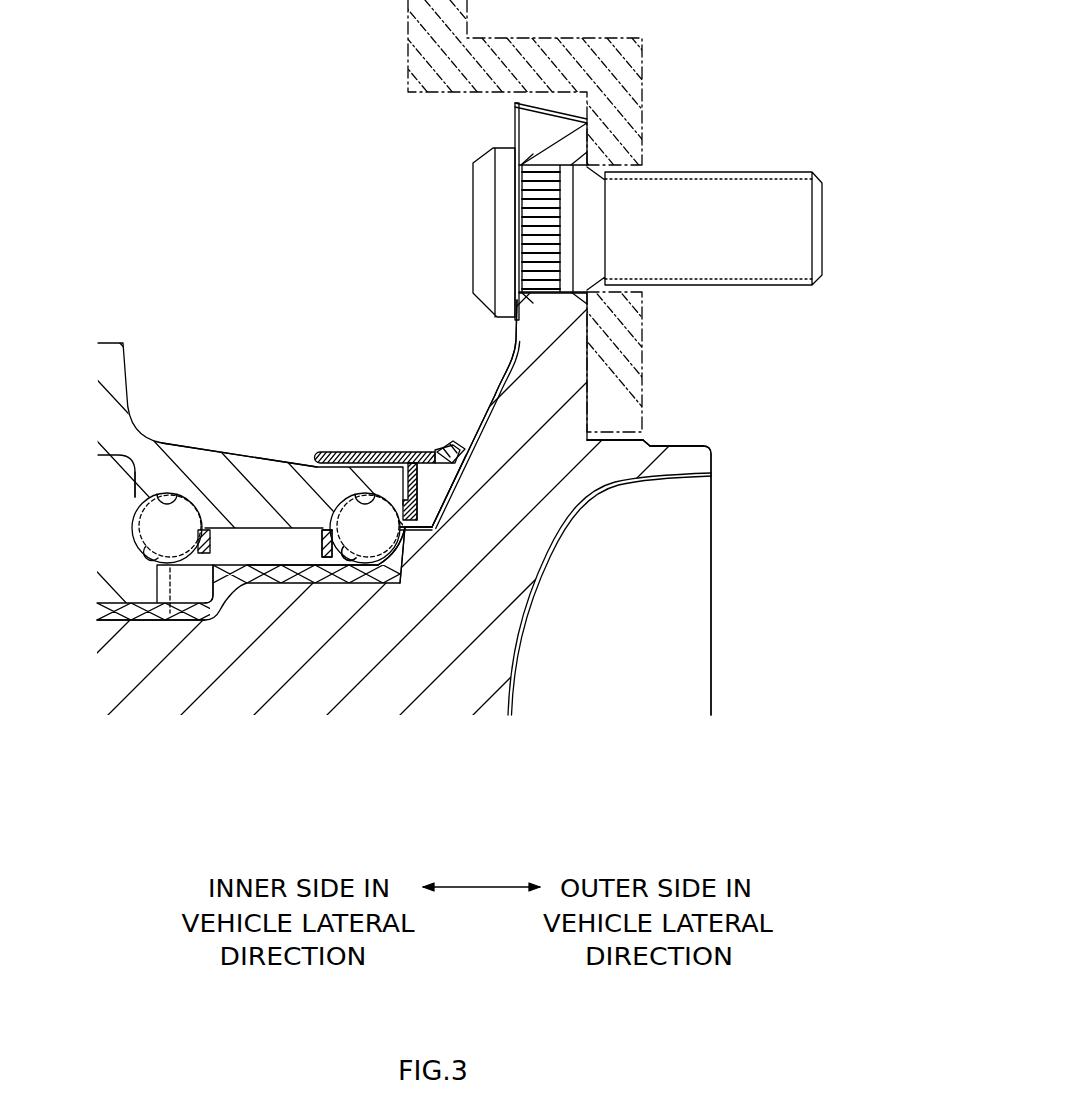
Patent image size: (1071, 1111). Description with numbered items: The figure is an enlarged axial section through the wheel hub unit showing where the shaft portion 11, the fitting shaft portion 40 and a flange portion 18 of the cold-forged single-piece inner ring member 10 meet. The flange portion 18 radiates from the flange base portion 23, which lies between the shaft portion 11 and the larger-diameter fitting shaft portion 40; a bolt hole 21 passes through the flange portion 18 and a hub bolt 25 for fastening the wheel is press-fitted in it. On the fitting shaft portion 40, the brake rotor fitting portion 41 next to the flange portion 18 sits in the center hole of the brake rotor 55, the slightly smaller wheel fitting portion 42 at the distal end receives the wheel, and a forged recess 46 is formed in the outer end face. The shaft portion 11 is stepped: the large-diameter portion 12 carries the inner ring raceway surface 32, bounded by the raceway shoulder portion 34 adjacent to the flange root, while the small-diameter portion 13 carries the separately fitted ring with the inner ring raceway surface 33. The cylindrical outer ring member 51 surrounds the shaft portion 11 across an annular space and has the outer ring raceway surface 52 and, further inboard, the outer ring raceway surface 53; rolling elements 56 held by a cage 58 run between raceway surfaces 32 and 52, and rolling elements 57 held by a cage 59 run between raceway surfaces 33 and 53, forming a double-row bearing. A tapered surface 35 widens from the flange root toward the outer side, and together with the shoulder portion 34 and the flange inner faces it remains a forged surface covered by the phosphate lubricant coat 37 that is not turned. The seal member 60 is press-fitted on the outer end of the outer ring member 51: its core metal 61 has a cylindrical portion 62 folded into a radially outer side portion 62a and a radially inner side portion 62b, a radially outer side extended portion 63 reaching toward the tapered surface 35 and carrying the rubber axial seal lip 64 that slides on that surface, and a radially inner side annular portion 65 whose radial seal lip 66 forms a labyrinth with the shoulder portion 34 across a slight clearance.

The inner ring member 10 is at (506, 343).
The shaft portion 11 is at (225, 384).
The large-diameter portion 12 is at (278, 560).
The small-diameter portion 13 is at (228, 528).
The flange portion 18 is at (527, 320).
The bolt hole 21 is at (548, 168).
The flange base portion 23 is at (507, 480).
The hub bolt 25 is at (487, 227).
The inner ring raceway surface 32 is at (410, 555).
The inner ring raceway surface 33 is at (150, 562).
The raceway shoulder portion 34 is at (415, 585).
The tapered surface 35 is at (472, 437).
The lubricant coat 37 is at (503, 375).
The fitting shaft portion 40 is at (722, 333).
The brake rotor fitting portion 41 is at (637, 420).
The wheel fitting portion 42 is at (647, 443).
The forged recess 46 is at (507, 677).
The outer ring member 51 is at (192, 445).
The outer ring raceway surface 52 is at (343, 503).
The outer ring raceway surface 53 is at (180, 503).
The brake rotor 55 is at (645, 58).
The rolling element 56 is at (370, 560).
The rolling element 57 is at (125, 623).
The cage 58 is at (302, 547).
The cage 59 is at (222, 600).
The seal member 60 is at (343, 441).
The core metal 61 is at (367, 449).
The cylindrical portion 62 is at (348, 757).
The radially outer side portion 62a is at (363, 562).
The radially inner side portion 62b is at (326, 550).
The radially outer side extended portion 63 is at (425, 447).
The seal lip (axial lip) 64 is at (460, 441).
The radially inner side annular portion 65 is at (417, 487).
The seal lip (radial lip) 66 is at (400, 543).